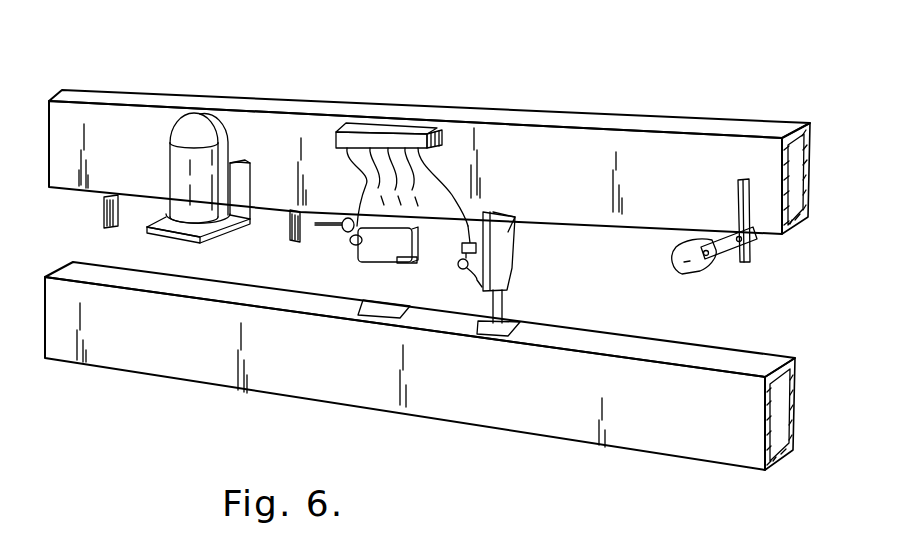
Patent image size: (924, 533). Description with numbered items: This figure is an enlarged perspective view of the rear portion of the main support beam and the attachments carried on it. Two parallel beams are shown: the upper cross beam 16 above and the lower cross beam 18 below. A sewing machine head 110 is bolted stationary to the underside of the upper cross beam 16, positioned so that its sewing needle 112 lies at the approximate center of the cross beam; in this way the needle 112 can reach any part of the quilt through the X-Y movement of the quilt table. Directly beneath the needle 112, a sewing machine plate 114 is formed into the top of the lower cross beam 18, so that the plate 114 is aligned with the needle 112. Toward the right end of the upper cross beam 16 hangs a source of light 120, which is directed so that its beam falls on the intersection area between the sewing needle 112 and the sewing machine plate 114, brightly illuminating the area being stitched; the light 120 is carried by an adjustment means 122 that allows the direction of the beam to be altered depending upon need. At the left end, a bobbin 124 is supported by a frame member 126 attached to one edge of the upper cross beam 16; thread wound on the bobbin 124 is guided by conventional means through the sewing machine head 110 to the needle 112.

The upper cross beam 16 is at (567, 140).
The lower cross beam 18 is at (157, 362).
The sewing machine head 110 is at (526, 267).
The sewing needle 112 is at (503, 315).
The sewing machine plate 114 is at (472, 334).
The source of light 120 is at (688, 271).
The adjustment means 122 is at (727, 258).
The bobbin 124 is at (177, 182).
The frame member 126 is at (240, 158).